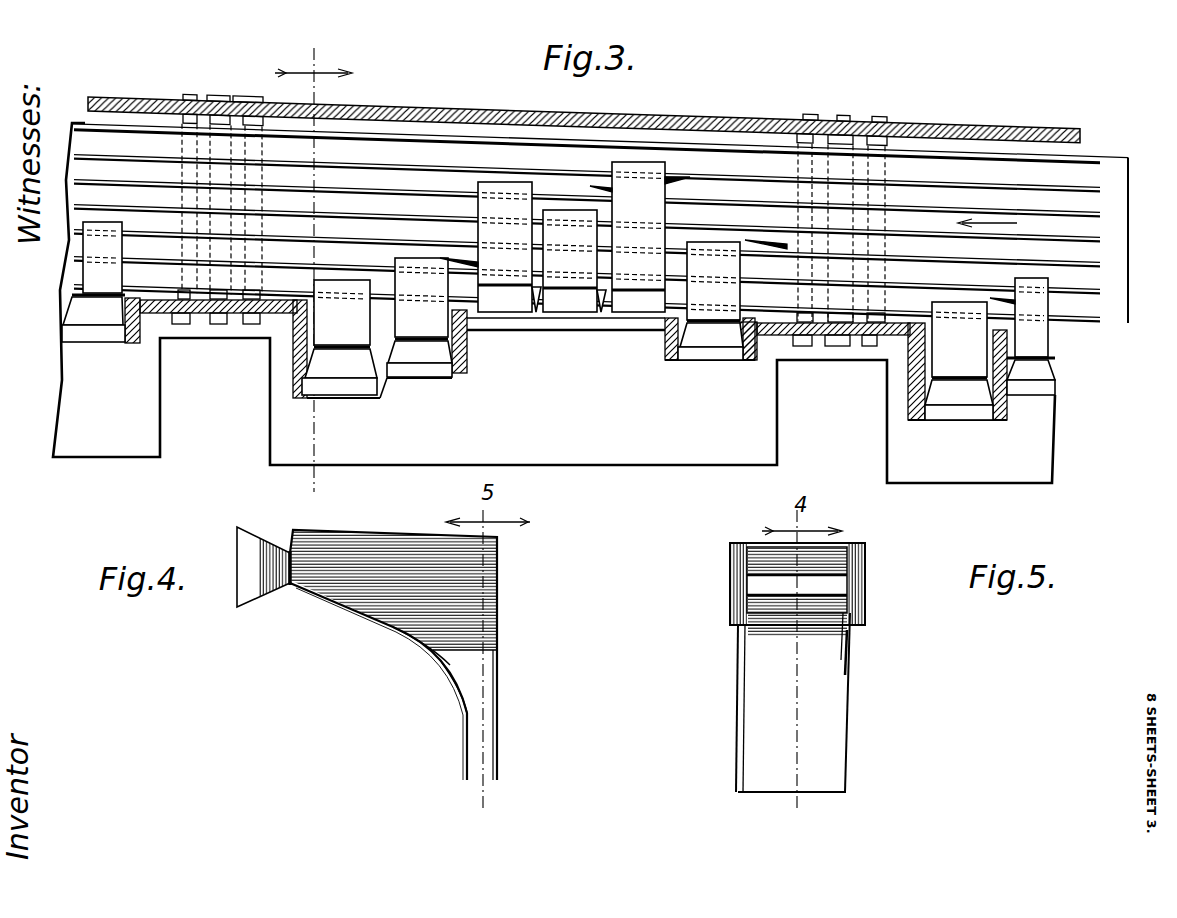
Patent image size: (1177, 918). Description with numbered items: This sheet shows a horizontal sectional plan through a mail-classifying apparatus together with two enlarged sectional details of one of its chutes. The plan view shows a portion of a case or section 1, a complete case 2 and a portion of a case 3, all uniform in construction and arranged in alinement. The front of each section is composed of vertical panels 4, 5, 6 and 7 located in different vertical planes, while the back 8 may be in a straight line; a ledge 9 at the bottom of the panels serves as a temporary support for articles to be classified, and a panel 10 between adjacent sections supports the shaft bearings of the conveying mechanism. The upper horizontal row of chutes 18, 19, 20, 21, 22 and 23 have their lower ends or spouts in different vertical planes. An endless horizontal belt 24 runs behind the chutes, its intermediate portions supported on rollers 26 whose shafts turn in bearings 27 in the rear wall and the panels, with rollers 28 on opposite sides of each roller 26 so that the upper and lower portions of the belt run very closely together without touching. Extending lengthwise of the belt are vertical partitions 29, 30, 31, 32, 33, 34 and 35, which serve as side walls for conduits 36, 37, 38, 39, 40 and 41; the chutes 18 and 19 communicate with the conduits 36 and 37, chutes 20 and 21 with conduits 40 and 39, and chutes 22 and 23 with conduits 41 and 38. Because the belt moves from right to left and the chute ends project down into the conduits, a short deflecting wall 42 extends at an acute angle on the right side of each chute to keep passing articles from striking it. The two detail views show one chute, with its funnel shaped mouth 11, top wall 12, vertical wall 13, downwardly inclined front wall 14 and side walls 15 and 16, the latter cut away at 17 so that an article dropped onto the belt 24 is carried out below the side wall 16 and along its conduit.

In FIG. 3, the portion of a case or section 1 is at (106, 421).
In FIG. 3, the complete case 2 is at (415, 271).
In FIG. 3, the portion of a case 3 is at (969, 460).
In FIG. 3, the vertical panel 4 is at (375, 400).
In FIG. 3, the vertical panel 5 is at (459, 380).
In FIG. 3, the vertical panel 6 is at (606, 331).
In FIG. 3, the vertical panel 7 is at (674, 361).
In FIG. 3, the back 8 is at (648, 114).
In FIG. 3, the ledge 9 is at (554, 303).
In FIG. 3, the panel 10 is at (160, 316).
In FIG. 4, the funnel shaped mouth 11 is at (237, 545).
In FIG. 5, the funnel shaped mouth 11 is at (731, 596).
In FIG. 4, the top wall 12 is at (380, 531).
In FIG. 5, the top wall 12 is at (842, 545).
In FIG. 4, the vertical wall 13 is at (496, 690).
In FIG. 4, the downwardly inclined front wall 14 is at (433, 648).
In FIG. 5, the side wall 15 is at (738, 681).
In FIG. 4, the side wall 16 is at (475, 604).
In FIG. 5, the side wall 16 is at (850, 655).
In FIG. 4, the cut-away portion 17 is at (468, 654).
In FIG. 5, the cut-away portion 17 is at (842, 668).
In FIG. 3, the chute 18 is at (339, 337).
In FIG. 3, the chute 19 is at (419, 317).
In FIG. 3, the chute 20 is at (509, 247).
In FIG. 3, the chute 21 is at (574, 261).
In FIG. 3, the chute 22 is at (638, 237).
In FIG. 3, the chute 23 is at (710, 301).
In FIG. 3, the endless horizontal belt 24 is at (1103, 240).
In FIG. 3, the roller 26 is at (217, 120).
In FIG. 3, the bearing 27 is at (228, 96).
In FIG. 3, the roller 28 is at (183, 115).
In FIG. 3, the vertical partition 29 is at (1091, 318).
In FIG. 3, the vertical partition 30 is at (1103, 318).
In FIG. 3, the vertical partition 31 is at (1103, 293).
In FIG. 3, the vertical partition 32 is at (1103, 267).
In FIG. 3, the vertical partition 33 is at (1103, 213).
In FIG. 3, the vertical partition 34 is at (1103, 190).
In FIG. 3, the vertical partition 35 is at (1097, 156).
In FIG. 3, the conduit 36 is at (587, 287).
In FIG. 3, the conduit 37 is at (587, 259).
In FIG. 3, the conduit 38 is at (587, 233).
In FIG. 3, the conduit 39 is at (587, 208).
In FIG. 3, the conduit 40 is at (587, 183).
In FIG. 3, the conduit 41 is at (587, 158).
In FIG. 3, the deflecting wall 42 is at (463, 262).